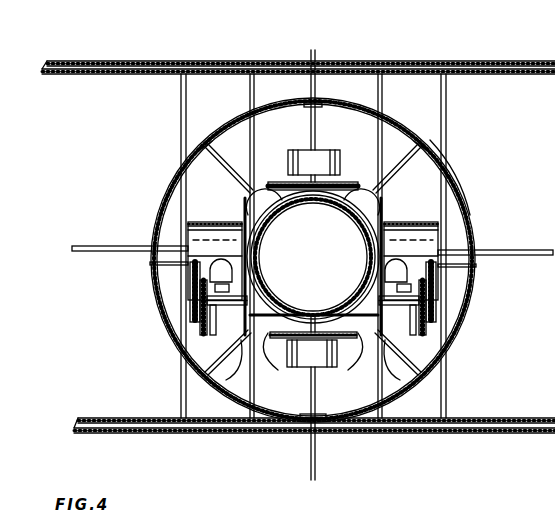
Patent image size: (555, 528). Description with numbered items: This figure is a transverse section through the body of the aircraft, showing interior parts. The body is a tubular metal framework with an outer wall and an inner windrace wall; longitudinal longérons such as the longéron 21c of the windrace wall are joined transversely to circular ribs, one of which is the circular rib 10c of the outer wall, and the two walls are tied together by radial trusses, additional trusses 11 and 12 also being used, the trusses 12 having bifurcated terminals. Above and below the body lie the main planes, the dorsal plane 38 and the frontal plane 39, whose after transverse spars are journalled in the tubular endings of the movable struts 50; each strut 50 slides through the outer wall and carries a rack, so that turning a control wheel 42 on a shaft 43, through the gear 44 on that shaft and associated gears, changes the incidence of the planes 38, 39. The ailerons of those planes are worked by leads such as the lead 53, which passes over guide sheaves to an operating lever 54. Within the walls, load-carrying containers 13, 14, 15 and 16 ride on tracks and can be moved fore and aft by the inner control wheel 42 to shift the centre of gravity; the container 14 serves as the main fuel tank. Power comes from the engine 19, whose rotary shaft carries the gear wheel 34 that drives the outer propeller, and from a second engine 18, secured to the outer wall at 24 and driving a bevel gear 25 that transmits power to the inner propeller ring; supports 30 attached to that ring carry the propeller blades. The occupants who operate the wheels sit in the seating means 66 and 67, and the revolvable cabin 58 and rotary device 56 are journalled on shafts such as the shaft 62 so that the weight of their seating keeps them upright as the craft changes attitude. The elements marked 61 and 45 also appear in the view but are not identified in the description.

The dorsal plane 38 is at (455, 62).
The frontal plane 39 is at (450, 436).
The movable strut 50 is at (181, 108).
The lead 53 is at (250, 101).
The operating lever 54 is at (382, 100).
The truss 11 is at (415, 164).
The circular rib 10c is at (458, 189).
The truss 12 is at (226, 163).
The container 13 is at (399, 166).
The securing point 24 is at (311, 126).
The internal combustion engine 18 is at (328, 150).
The bevel gear 25 is at (352, 184).
The container 14 is at (258, 192).
The support 30 is at (345, 281).
The longéron 21c is at (313, 208).
The revolvable cabin 58 is at (198, 223).
The rotary device 56 is at (432, 232).
The seating means 66 is at (413, 280).
The left axle 61 is at (157, 262).
The shaft 62 is at (465, 265).
The gear 44 is at (192, 338).
The shaft 43 is at (198, 318).
The shaft bearing 45 is at (205, 284).
The seating means 67 is at (205, 306).
The control wheel 42 is at (246, 336).
The gear wheel 34 is at (318, 372).
The container 16 is at (296, 366).
The container 15 is at (312, 360).
The motive power plant 19 is at (310, 360).